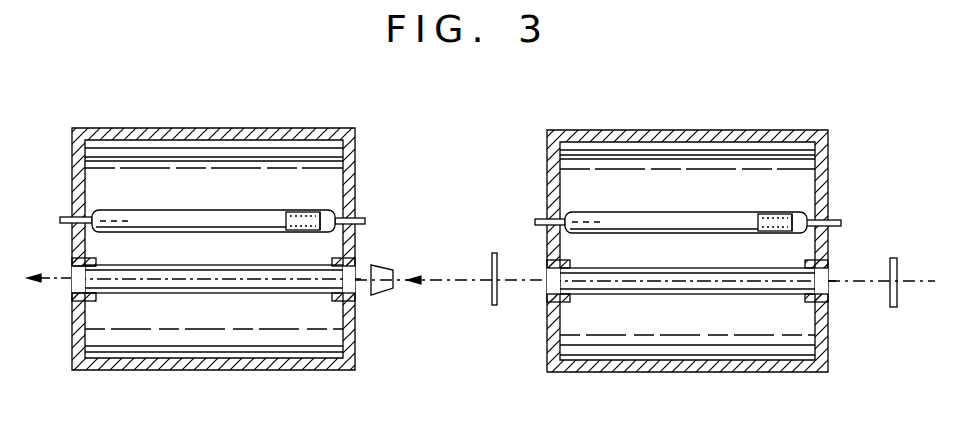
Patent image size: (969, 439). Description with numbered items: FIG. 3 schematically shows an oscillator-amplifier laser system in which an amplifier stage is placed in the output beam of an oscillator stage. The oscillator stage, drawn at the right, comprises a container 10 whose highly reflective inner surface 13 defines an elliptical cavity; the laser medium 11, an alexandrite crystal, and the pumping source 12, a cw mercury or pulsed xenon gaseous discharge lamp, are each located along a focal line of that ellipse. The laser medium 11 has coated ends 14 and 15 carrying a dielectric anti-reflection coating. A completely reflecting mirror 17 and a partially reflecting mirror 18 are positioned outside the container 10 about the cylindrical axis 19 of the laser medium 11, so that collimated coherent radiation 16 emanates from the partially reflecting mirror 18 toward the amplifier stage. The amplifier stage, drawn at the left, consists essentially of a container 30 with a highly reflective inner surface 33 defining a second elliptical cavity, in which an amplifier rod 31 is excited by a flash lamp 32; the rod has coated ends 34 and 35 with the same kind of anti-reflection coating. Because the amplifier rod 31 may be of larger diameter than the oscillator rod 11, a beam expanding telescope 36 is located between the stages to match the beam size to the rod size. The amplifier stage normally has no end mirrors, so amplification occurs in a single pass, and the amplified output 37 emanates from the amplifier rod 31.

The container 10 is at (798, 133).
The laser medium 11 is at (716, 282).
The pumping source 12 is at (652, 213).
The highly reflective inner surface 13 is at (617, 140).
The coated end 14 is at (548, 281).
The coated end 15 is at (808, 281).
The radiation 16 is at (425, 279).
The completely reflecting mirror 17 is at (892, 257).
The partially reflecting mirror 18 is at (492, 286).
The cylindrical axis 19 is at (924, 281).
The container 30 is at (310, 131).
The amplifier rod 31 is at (220, 283).
The flash lamp 32 is at (191, 211).
The highly reflective inner surface 33 is at (163, 140).
The coated end 34 is at (80, 275).
The coated end 35 is at (338, 280).
The beam expanding telescope 36 is at (384, 273).
The amplified output 37 is at (52, 278).